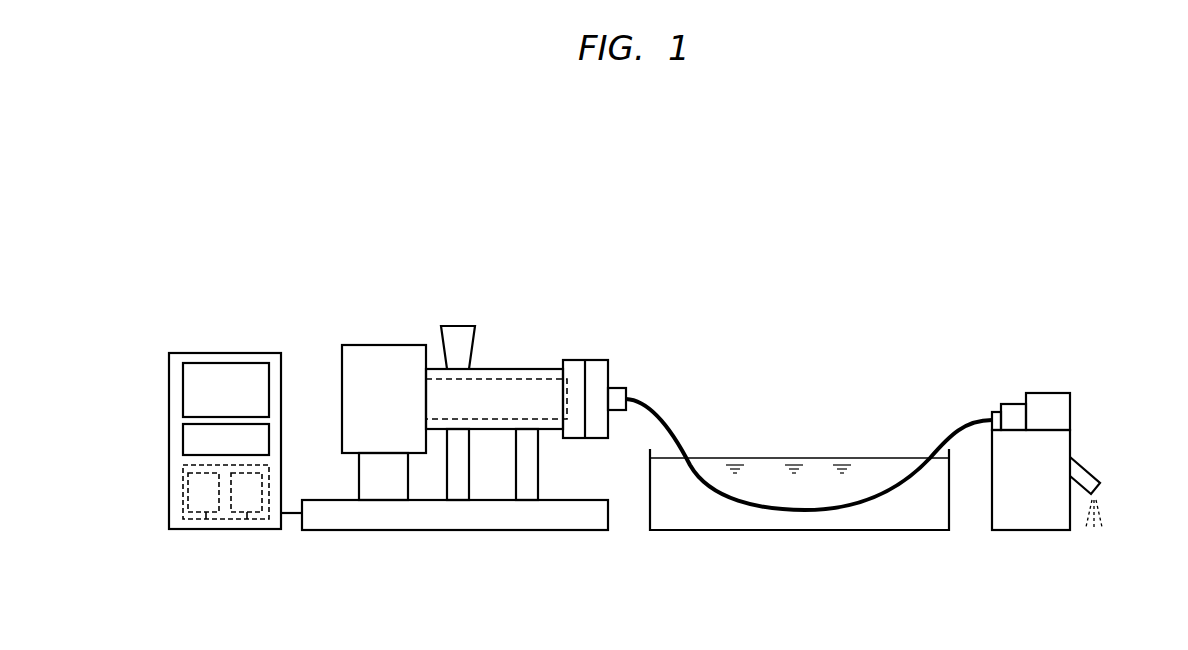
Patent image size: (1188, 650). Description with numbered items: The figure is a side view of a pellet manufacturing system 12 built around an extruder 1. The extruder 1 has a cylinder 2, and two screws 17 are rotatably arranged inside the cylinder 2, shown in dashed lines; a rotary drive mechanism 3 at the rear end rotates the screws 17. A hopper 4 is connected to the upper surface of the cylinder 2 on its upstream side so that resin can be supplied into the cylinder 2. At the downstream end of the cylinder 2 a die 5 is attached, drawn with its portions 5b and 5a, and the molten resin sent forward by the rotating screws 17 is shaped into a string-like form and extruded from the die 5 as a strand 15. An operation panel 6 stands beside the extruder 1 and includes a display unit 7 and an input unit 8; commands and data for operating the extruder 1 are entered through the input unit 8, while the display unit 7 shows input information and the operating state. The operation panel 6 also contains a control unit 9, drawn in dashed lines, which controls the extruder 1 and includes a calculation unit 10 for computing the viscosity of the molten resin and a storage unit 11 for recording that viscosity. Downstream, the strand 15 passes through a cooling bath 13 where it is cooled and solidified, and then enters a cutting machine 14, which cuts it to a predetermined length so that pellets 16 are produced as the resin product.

The extruder 1 is at (625, 582).
The cylinder 2 is at (490, 375).
The rotary drive mechanism 3 is at (384, 370).
The hopper 4 is at (460, 340).
The die 5 is at (598, 334).
The die outlet (nozzle) 5a is at (615, 378).
The die head 5b is at (577, 375).
The operation panel 6 is at (224, 353).
The display unit 7 is at (183, 387).
The input unit 8 is at (183, 437).
The control unit 9 is at (180, 525).
The calculation unit 10 is at (206, 529).
The storage unit 11 is at (247, 529).
The pellet manufacturing system 12 is at (1018, 262).
The cooling bath 13 is at (927, 513).
The cutting machine 14 is at (1048, 412).
The strand 15 is at (676, 435).
The pellets 16 is at (1105, 505).
The screws 17 is at (525, 378).